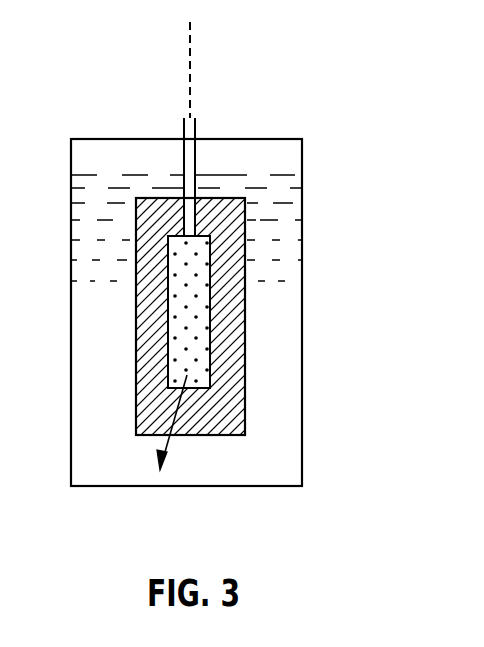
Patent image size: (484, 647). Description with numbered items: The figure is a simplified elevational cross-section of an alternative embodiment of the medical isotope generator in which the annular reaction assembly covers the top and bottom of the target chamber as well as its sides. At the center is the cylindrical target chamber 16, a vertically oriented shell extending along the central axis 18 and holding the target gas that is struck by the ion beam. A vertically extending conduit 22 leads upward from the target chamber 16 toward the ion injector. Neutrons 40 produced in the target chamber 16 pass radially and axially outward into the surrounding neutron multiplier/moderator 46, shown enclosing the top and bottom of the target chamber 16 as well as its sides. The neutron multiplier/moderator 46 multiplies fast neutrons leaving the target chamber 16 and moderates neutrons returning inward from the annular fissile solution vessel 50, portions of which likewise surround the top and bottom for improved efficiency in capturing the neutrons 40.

The target chamber 16 is at (202, 277).
The central axis 18 is at (190, 62).
The conduit 22 is at (196, 133).
The neutrons 40 is at (172, 442).
The neutron multiplier/moderator 46 is at (225, 342).
The annular fissile solution vessel 50 is at (287, 407).